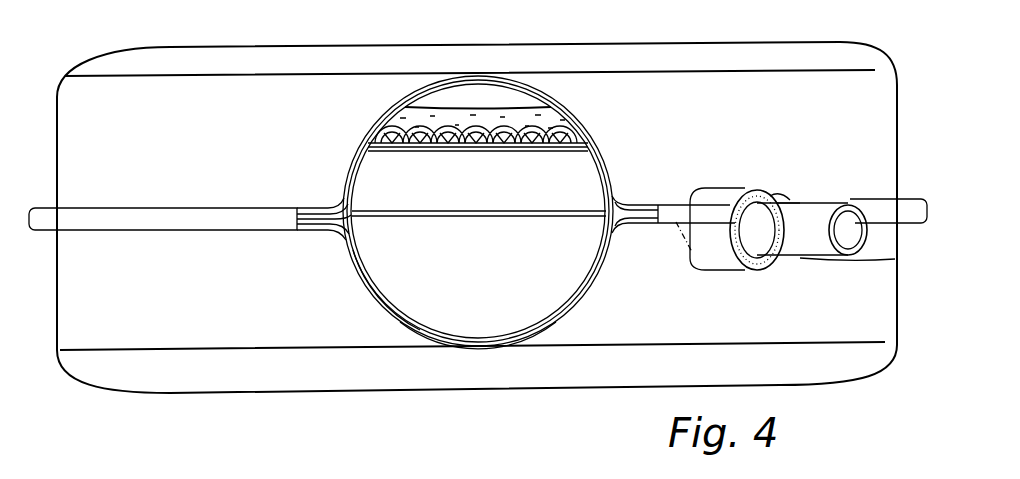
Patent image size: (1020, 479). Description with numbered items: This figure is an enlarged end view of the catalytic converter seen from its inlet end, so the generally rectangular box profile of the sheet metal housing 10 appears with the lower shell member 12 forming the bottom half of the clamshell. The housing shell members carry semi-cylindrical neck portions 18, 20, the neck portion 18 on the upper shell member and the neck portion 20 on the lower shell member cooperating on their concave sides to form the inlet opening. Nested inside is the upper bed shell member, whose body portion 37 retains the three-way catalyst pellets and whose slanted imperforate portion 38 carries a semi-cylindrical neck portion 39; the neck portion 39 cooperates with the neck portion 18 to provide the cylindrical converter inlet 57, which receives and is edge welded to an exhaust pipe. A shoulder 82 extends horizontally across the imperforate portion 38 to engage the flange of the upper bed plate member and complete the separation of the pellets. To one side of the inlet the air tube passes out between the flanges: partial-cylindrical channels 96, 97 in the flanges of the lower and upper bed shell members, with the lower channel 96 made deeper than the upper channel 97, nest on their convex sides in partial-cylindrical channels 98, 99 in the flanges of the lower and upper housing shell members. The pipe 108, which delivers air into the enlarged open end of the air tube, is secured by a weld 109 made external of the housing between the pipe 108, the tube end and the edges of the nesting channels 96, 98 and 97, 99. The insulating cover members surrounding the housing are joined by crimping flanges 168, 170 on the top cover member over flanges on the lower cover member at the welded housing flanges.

The sheet metal housing 10 is at (222, 408).
The lower shell member 12 is at (160, 398).
The crimping flange 168 is at (150, 213).
The neck portion 20 is at (560, 317).
The imperforate portion 38 is at (560, 270).
The body portion 37 is at (570, 173).
The neck portion 39 is at (497, 332).
The converter inlet 57 is at (405, 283).
The shoulder 82 is at (506, 207).
The neck portion 18 is at (356, 153).
The partial-cylindrical channel 96 is at (740, 250).
The partial-cylindrical channel 98 is at (760, 272).
The partial-cylindrical channel 99 is at (782, 192).
The partial-cylindrical channel 97 is at (788, 199).
The weld 109 is at (780, 258).
The pipe 108 is at (895, 259).
The crimping flange 170 is at (877, 207).